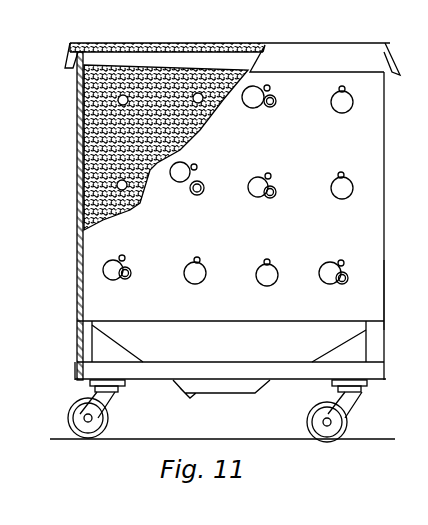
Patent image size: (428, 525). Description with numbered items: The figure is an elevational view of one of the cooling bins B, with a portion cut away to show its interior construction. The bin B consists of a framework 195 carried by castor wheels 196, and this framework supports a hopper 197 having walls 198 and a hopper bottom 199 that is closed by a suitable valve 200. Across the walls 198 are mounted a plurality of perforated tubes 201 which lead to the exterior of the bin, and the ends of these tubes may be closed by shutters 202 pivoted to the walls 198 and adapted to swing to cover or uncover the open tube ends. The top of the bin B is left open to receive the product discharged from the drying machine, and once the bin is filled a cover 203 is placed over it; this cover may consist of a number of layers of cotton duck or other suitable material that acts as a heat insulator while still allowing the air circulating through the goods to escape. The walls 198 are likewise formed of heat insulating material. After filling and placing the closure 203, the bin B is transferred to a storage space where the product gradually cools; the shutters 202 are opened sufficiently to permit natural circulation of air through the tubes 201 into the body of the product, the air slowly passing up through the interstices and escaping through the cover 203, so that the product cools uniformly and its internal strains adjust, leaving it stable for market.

The framework 195 is at (100, 368).
The castor wheels 196 is at (70, 405).
The hopper 197 is at (370, 250).
The walls 198 is at (77, 152).
The hopper bottom 199 is at (146, 352).
The valve 200 is at (235, 394).
The perforated tubes 201 is at (198, 128).
The shutters 202 is at (280, 263).
The cover 203 is at (193, 43).
The bin B is at (355, 300).